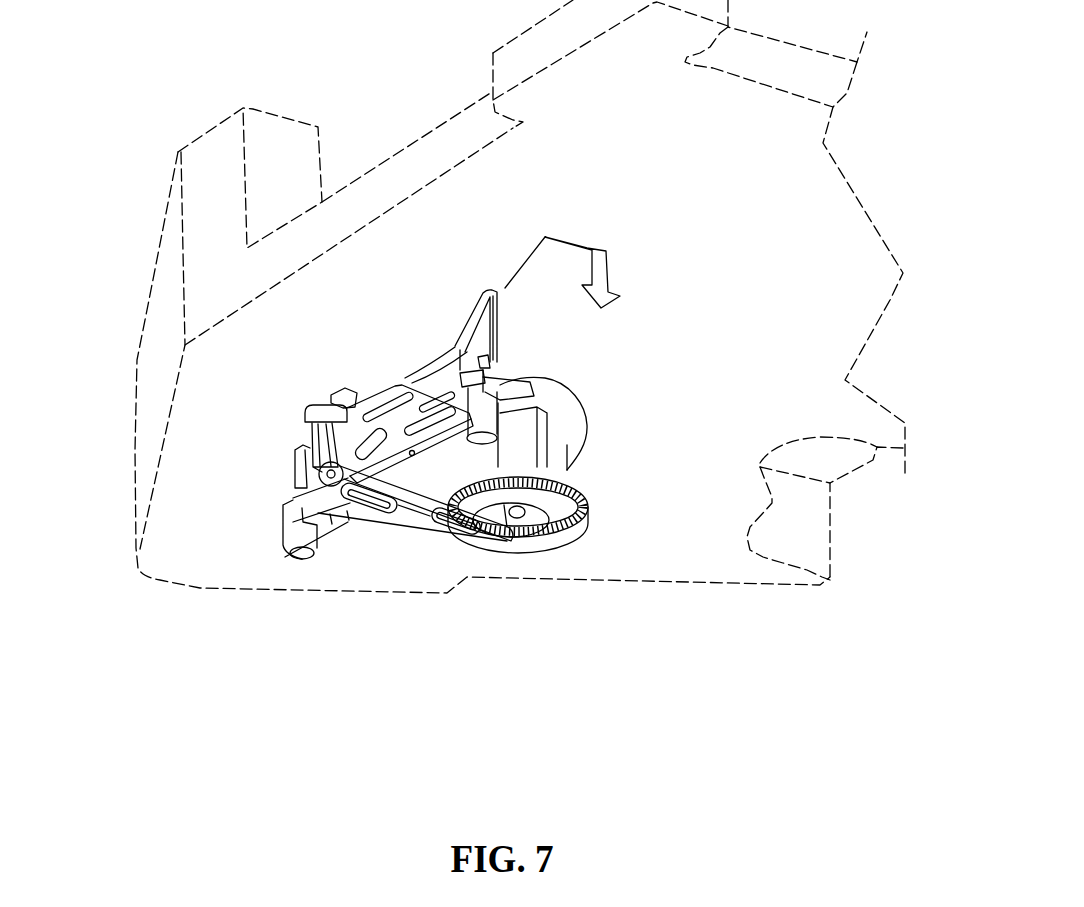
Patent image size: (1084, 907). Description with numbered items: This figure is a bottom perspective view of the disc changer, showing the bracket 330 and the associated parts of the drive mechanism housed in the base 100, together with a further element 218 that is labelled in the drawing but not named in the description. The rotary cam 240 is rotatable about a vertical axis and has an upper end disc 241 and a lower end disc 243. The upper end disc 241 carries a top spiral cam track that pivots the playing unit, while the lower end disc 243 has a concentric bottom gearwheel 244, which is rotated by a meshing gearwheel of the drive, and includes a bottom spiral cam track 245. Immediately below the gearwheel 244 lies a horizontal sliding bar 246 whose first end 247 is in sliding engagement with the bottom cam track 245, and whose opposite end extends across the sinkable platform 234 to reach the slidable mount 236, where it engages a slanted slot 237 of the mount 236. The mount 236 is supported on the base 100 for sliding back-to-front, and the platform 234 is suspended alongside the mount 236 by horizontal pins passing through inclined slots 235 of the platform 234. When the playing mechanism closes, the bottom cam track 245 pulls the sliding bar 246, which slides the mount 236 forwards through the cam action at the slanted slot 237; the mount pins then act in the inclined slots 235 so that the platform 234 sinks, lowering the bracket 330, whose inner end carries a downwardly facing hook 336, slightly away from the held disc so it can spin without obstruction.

The base 100 is at (821, 586).
The mounting bracket 218 is at (313, 453).
The sinkable platform 234 is at (280, 555).
The inclined slots 235 is at (349, 513).
The slidable mount 236 is at (376, 375).
The slanted slot 237 is at (312, 436).
The rotary cam 240 is at (602, 378).
The upper end disc 241 is at (592, 413).
The lower end disc 243 is at (583, 498).
The bottom gearwheel 244 is at (578, 528).
The bottom spiral cam track 245 is at (502, 533).
The sliding bar 246 is at (435, 520).
The first end 247 is at (507, 515).
The bracket 330 is at (456, 300).
The downwardly facing hook 336 is at (480, 368).